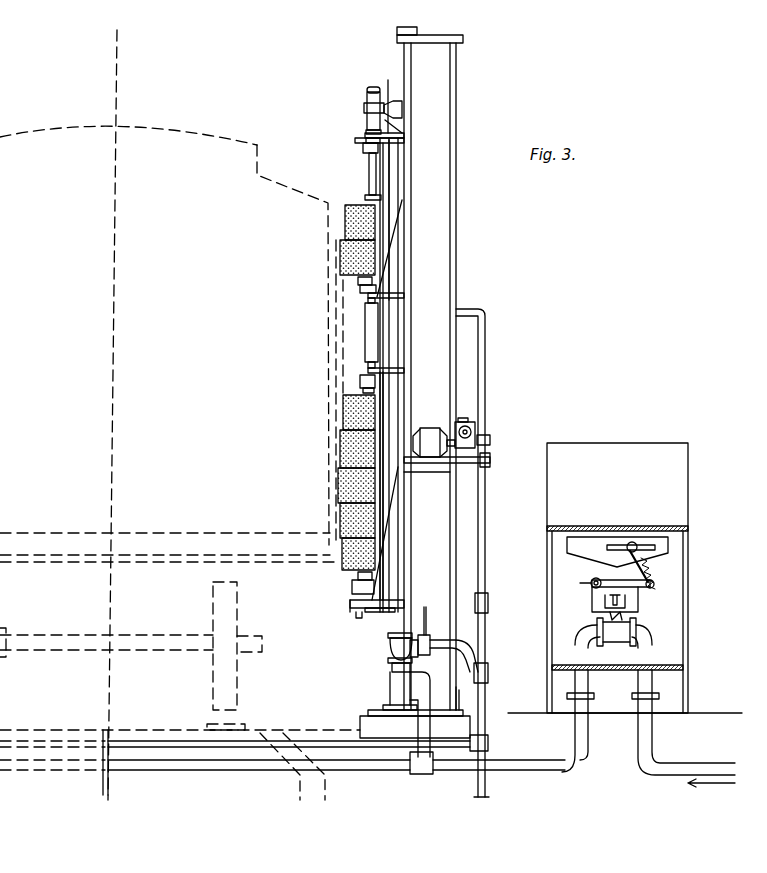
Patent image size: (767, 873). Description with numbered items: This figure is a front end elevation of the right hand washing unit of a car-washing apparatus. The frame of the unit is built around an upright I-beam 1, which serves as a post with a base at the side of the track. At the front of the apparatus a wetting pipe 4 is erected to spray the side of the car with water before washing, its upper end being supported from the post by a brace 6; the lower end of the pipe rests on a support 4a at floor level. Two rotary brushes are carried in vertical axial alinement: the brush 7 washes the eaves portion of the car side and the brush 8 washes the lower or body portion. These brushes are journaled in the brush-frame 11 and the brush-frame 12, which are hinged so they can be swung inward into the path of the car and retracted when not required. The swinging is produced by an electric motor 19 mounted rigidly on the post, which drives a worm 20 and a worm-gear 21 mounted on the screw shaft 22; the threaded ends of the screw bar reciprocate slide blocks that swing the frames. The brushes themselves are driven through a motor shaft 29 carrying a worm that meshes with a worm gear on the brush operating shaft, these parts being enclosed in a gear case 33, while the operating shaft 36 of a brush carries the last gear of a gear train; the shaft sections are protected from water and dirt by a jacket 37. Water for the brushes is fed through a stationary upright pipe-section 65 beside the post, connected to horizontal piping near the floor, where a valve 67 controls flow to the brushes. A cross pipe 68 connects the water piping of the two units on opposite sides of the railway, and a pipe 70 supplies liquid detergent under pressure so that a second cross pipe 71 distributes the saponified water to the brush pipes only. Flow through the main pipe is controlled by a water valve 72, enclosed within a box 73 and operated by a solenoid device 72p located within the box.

The upright I-beam 1 is at (457, 94).
The brace 6 is at (440, 38).
The wetting pipe 4 is at (403, 55).
The frame bottom bracket 4a is at (392, 614).
The motor shaft 29 is at (376, 97).
The gear case 33 is at (366, 100).
The operating shaft 36 is at (363, 160).
The brush-frame 11 is at (388, 165).
The brush 7 is at (348, 203).
The jacket 37 is at (365, 338).
The brush-frame 12 is at (388, 391).
The brush 8 is at (343, 452).
The electric motor 19 is at (430, 428).
The screw shaft 22 is at (472, 430).
The worm-gear 21 is at (482, 440).
The worm 20 is at (480, 449).
The upright pipe-section 65 is at (485, 548).
The valve 67 is at (425, 605).
The cross pipe 68 is at (204, 763).
The pipe 70 is at (489, 797).
The cross pipe 71 is at (310, 742).
The water valve 72 is at (603, 636).
The solenoid device 72p is at (668, 552).
The box 73 is at (688, 632).